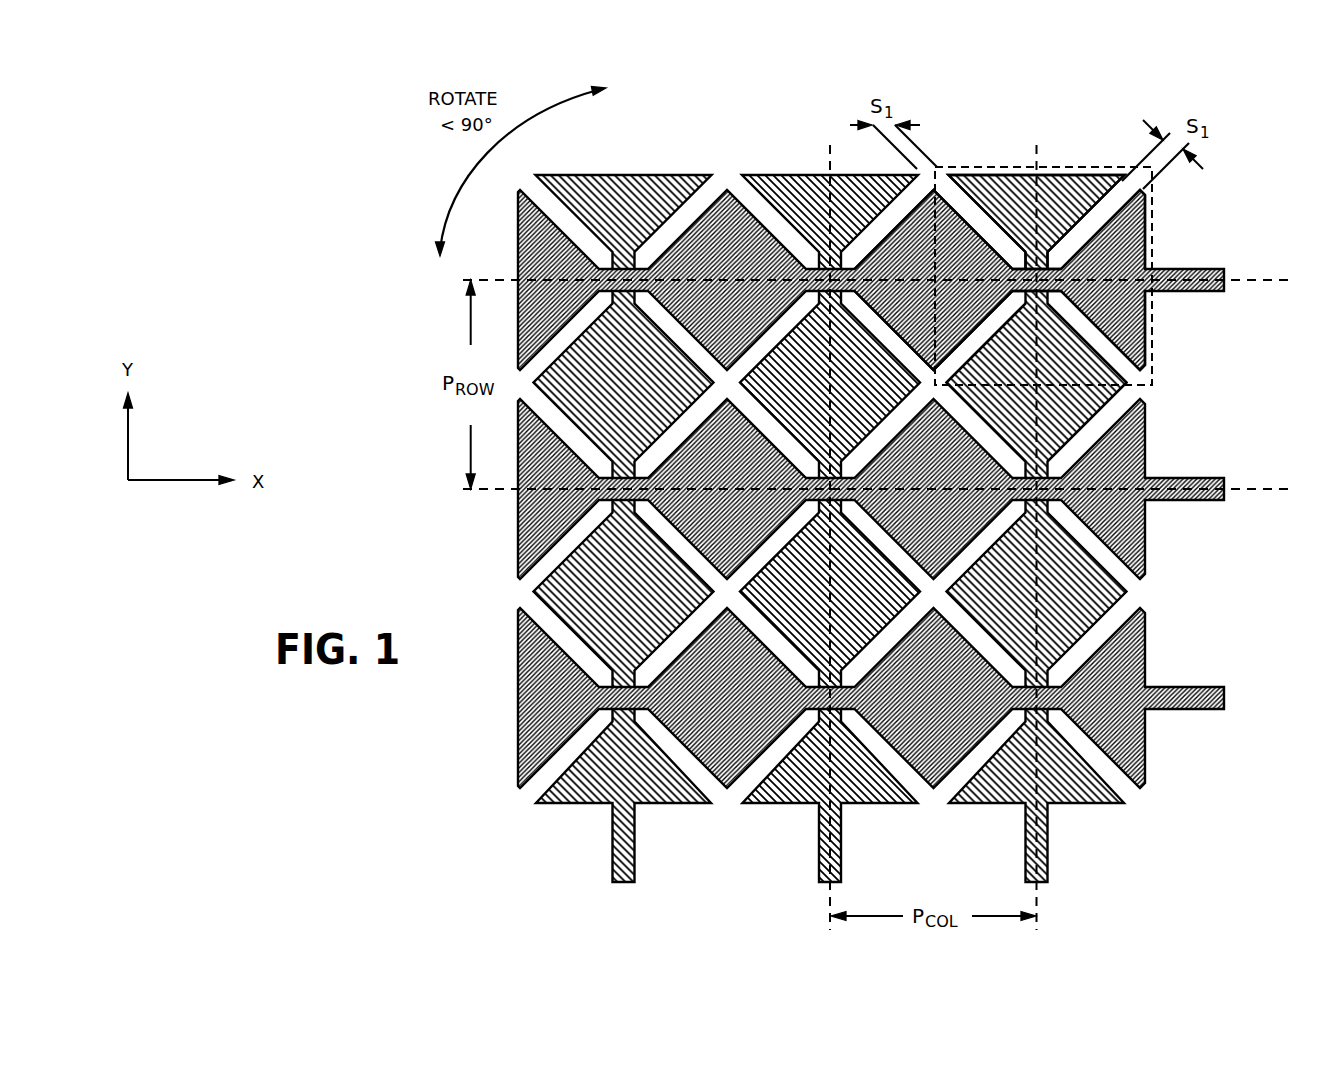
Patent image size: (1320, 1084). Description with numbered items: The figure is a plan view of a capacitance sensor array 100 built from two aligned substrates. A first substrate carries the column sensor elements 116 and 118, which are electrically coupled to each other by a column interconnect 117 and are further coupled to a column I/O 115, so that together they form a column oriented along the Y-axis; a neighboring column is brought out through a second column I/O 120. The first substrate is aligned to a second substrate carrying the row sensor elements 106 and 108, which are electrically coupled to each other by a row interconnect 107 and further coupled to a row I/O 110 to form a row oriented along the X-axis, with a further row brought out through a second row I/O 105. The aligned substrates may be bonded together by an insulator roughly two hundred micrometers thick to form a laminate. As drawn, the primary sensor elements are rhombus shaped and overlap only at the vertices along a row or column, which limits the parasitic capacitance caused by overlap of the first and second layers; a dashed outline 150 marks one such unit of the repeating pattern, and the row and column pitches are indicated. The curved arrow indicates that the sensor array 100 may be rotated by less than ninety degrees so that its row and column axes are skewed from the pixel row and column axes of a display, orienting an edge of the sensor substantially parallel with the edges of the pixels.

The capacitance sensor array 100 is at (414, 196).
The row electrode 105 is at (1224, 473).
The row I/O 110 is at (1224, 263).
The row sensor element 106 is at (1130, 266).
The row interconnect 107 is at (1045, 289).
The row sensor element 108 is at (925, 266).
The column I/O 115 is at (1043, 882).
The column electrode 120 is at (820, 882).
The column sensor element 116 is at (1084, 416).
The column interconnect 117 is at (1040, 267).
The column sensor element 118 is at (1003, 197).
The unit cell 150 is at (1022, 165).